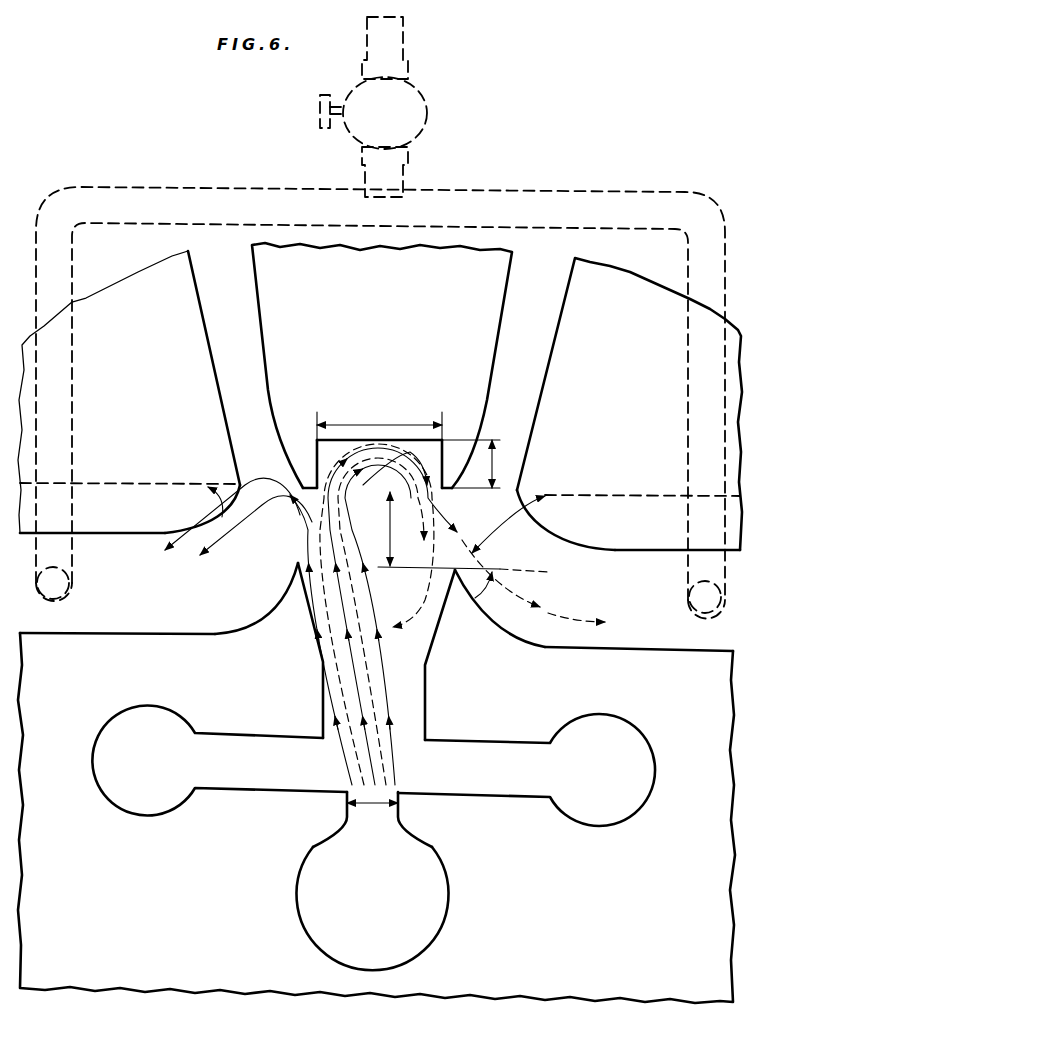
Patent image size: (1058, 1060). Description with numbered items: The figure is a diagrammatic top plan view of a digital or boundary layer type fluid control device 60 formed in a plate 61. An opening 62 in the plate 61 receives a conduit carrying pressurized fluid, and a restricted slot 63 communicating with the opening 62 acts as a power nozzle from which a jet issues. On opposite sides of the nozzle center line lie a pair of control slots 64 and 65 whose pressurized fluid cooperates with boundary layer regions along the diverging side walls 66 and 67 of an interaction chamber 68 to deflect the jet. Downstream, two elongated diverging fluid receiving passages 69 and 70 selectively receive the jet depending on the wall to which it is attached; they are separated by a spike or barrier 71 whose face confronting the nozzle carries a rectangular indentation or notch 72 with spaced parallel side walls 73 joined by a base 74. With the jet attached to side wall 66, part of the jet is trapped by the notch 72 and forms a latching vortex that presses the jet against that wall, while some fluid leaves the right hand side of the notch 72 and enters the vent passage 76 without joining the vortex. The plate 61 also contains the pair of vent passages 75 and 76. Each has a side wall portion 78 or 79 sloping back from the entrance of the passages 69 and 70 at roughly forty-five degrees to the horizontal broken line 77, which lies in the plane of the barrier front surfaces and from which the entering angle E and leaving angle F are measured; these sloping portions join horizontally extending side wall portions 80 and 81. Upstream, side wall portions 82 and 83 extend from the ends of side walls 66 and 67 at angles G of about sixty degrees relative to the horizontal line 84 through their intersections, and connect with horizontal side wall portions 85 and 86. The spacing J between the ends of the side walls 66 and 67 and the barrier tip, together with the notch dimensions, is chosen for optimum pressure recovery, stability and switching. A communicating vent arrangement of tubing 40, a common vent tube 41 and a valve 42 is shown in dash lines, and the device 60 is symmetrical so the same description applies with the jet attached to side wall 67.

The tubing 40 is at (376, 398).
The common vent tube 41 is at (399, 37).
The valve 42 is at (345, 133).
The fluid control device 60 is at (373, 1019).
The plate 61 is at (376, 732).
The opening 62 is at (432, 903).
The restricted slot (power nozzle) 63 is at (378, 793).
The control slot 64 is at (138, 797).
The control slot 65 is at (605, 815).
The side wall 66 is at (308, 636).
The side wall 67 is at (428, 648).
The interaction chamber 68 is at (390, 594).
The fluid receiving passage 69 is at (165, 408).
The fluid receiving passage 70 is at (607, 417).
The spike or barrier 71 is at (428, 432).
The indentation or notch 72 is at (461, 505).
The side walls of notch 73 is at (313, 461).
The base of notch 74 is at (405, 440).
The vent passage 75 is at (90, 595).
The vent passage 76 is at (672, 612).
The horizontal broken line 77 is at (124, 483).
The side wall portion 78 is at (227, 500).
The side wall portion 79 is at (540, 498).
The side wall portion 80 is at (100, 535).
The side wall portion 81 is at (622, 549).
The side wall portion 82 is at (283, 595).
The side wall portion 83 is at (462, 590).
The horizontal line 84 is at (555, 573).
The side wall portion 85 is at (185, 631).
The side wall portion 86 is at (670, 650).